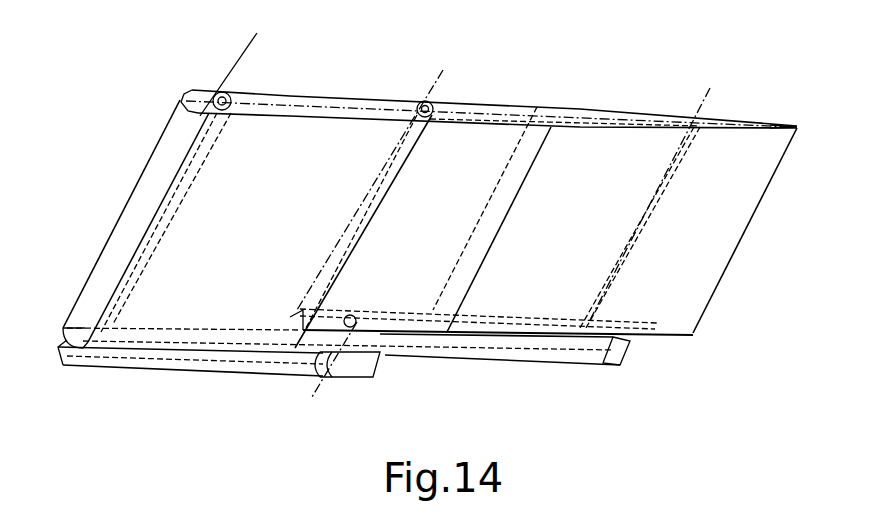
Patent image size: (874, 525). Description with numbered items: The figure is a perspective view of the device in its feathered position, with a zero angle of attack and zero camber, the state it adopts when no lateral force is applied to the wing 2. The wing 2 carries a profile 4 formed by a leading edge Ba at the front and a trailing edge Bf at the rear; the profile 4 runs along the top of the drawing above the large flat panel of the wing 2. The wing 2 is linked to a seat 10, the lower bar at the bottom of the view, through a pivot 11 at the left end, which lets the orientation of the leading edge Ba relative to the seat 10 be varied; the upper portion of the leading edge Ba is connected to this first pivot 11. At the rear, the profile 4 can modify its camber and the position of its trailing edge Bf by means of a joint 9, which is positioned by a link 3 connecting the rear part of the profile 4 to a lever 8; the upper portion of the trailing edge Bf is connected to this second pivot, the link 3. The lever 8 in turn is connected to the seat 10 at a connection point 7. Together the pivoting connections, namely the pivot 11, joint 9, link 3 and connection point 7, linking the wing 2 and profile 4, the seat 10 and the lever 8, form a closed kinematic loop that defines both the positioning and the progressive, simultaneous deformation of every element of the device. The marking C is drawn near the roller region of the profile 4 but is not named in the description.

The profiled wing 2 is at (418, 224).
The link 3 is at (645, 171).
The profile 4 is at (491, 71).
The connection point 7 is at (410, 372).
The lever 8 is at (510, 368).
The joint 9 is at (402, 162).
The seat 10 is at (335, 384).
The pivot 11 is at (48, 384).
The leading edge Ba is at (110, 63).
The trailing edge Bf is at (773, 71).
The roller axis C is at (231, 65).